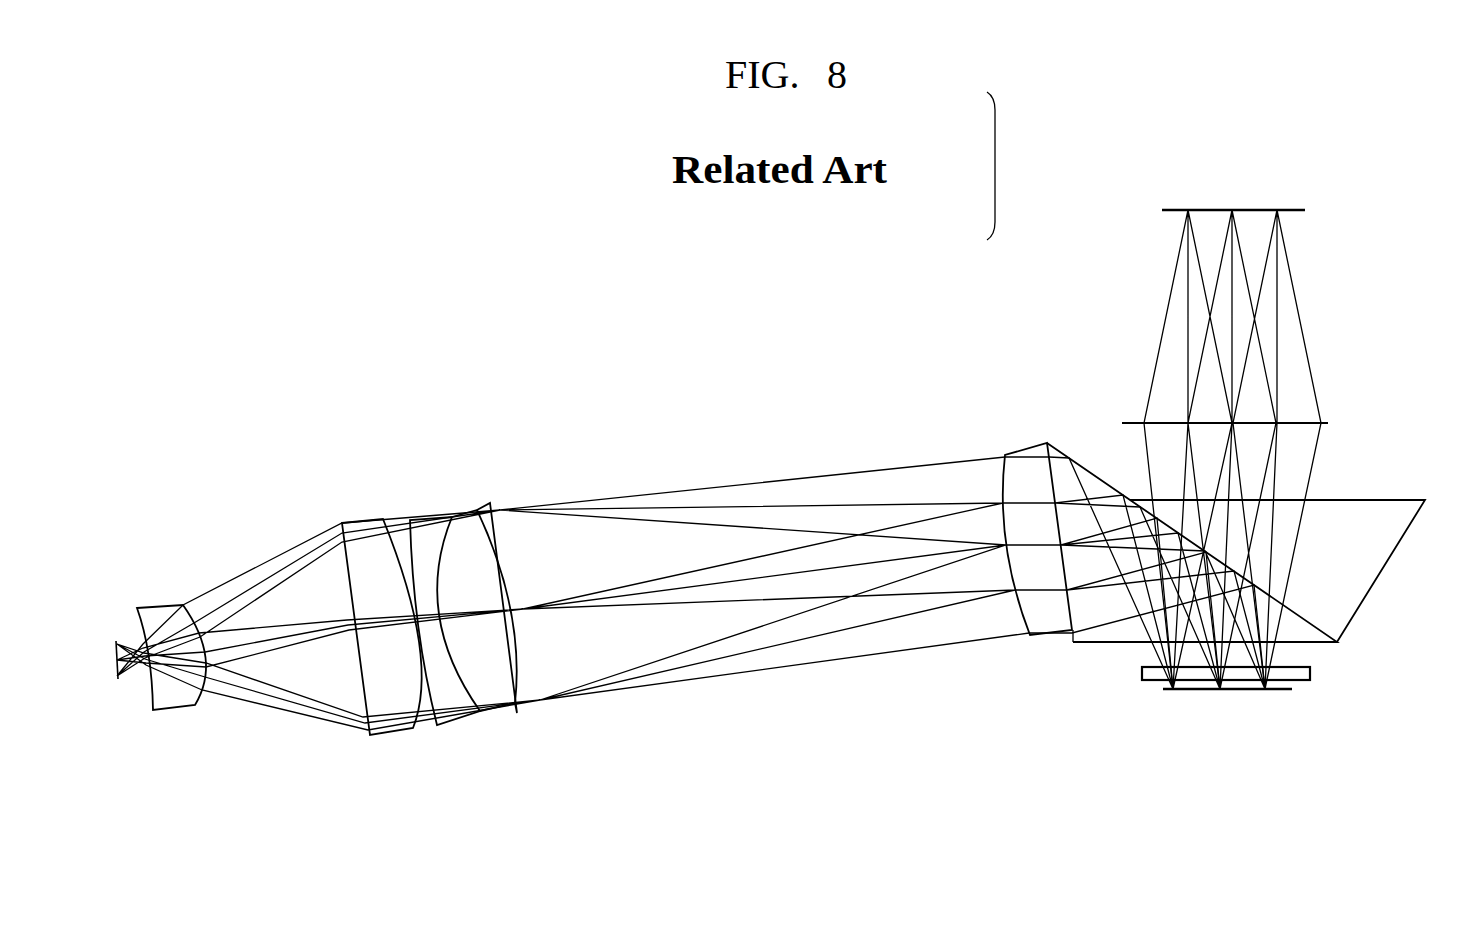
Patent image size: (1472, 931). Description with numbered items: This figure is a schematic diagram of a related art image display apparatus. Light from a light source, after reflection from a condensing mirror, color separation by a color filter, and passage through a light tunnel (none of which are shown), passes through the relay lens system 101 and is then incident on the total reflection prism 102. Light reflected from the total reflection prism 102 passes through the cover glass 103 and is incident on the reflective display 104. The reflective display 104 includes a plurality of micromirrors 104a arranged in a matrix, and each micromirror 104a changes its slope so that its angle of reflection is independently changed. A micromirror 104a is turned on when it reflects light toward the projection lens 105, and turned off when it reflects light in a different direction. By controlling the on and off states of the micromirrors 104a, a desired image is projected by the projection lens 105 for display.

The relay lens system 101 is at (1072, 665).
The total reflection prism 102 is at (1123, 642).
The cover glass 103 is at (1307, 662).
The reflective display 104 is at (1343, 685).
The micromirror 104a is at (1248, 693).
The projection lens 105 is at (1347, 207).